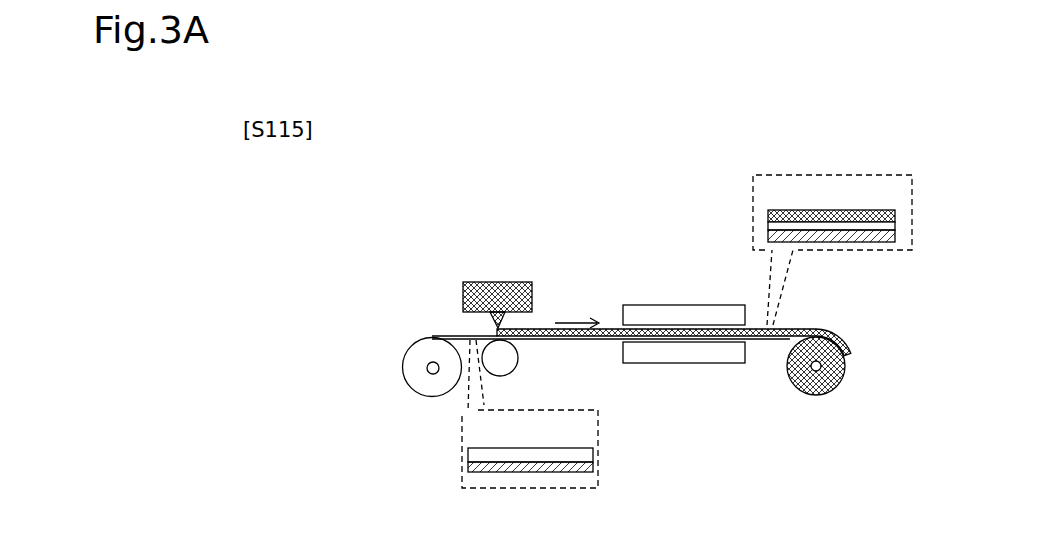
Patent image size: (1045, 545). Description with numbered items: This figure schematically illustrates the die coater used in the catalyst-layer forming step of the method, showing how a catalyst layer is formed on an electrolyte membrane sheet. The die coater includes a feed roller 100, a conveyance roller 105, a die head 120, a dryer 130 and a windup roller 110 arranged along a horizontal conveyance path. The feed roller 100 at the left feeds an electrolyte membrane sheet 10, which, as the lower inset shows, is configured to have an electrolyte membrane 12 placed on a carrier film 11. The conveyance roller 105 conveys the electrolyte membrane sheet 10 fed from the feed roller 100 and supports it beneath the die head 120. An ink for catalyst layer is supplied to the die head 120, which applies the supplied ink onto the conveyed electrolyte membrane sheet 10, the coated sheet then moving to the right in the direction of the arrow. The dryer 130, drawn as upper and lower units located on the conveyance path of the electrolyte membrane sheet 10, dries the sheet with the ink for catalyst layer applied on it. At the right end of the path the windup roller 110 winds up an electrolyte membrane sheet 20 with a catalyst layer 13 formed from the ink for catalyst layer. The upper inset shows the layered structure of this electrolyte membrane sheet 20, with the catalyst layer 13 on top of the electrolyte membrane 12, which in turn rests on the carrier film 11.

The electrolyte membrane sheet 10 is at (403, 369).
The carrier film 11 is at (768, 236).
The electrolyte membrane 12 is at (768, 226).
The catalyst layer 13 is at (768, 213).
The electrolyte membrane sheet with catalyst layer 20 is at (831, 327).
The feed roller 100 is at (428, 362).
The conveyance roller 105 is at (518, 358).
The windup roller 110 is at (845, 368).
The die head 120 is at (496, 282).
The dryer 130 is at (713, 304).